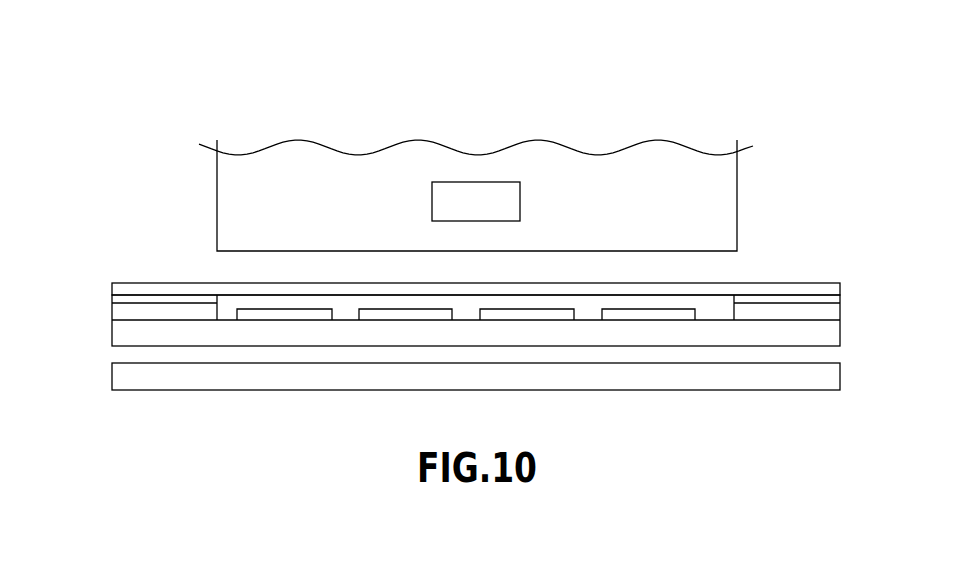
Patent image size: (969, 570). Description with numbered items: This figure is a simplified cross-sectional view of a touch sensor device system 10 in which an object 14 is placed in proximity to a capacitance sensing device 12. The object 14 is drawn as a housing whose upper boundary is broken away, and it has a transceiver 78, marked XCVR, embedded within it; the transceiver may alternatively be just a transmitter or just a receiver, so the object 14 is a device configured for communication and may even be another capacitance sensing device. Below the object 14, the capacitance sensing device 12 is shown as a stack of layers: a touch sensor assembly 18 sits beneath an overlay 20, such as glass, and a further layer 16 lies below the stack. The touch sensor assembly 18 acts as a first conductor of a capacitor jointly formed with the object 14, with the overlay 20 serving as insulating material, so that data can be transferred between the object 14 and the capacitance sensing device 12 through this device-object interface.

The system 10 is at (278, 93).
The capacitance sensing device 12 is at (104, 351).
The object 14 is at (203, 194).
The substrate 16 is at (840, 375).
The touch sensor assembly 18 is at (849, 320).
The overlay 20 is at (795, 283).
The transceiver 78 is at (474, 182).